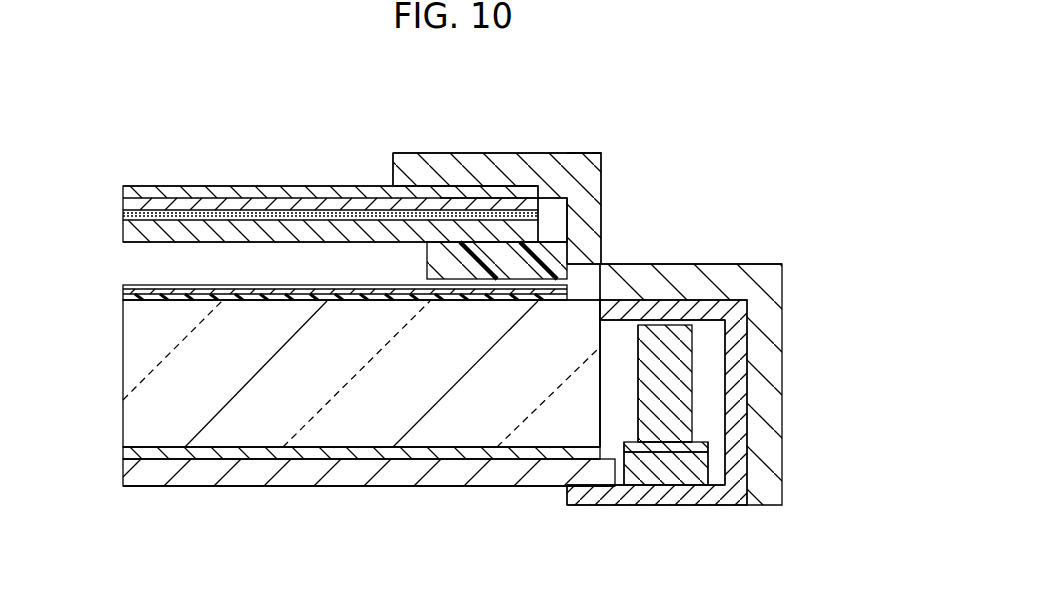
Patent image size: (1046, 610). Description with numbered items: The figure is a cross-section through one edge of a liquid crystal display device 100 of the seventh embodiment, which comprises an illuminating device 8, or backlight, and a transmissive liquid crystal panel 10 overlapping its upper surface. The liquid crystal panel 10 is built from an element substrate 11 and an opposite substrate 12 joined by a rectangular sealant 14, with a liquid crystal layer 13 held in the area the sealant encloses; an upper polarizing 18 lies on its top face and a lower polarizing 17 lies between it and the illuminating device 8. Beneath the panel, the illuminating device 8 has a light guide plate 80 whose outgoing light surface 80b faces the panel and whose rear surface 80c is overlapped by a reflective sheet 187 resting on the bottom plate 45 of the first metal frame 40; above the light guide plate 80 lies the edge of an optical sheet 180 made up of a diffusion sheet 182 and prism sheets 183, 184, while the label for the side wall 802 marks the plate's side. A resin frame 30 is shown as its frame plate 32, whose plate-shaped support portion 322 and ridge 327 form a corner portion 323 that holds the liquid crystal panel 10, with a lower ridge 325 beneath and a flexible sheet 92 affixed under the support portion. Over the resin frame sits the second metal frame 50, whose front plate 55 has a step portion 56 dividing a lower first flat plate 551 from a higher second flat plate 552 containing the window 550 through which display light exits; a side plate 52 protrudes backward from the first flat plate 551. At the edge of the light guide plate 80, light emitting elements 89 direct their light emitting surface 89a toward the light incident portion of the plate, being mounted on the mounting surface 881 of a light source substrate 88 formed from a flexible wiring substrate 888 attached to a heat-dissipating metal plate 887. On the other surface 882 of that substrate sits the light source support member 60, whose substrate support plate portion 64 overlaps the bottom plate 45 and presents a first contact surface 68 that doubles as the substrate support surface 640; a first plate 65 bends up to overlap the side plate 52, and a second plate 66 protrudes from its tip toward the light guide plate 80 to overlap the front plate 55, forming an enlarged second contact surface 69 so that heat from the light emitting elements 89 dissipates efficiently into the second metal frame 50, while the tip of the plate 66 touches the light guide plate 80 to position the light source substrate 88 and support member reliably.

The liquid crystal display device 100 is at (570, 48).
The liquid crystal panel 10 is at (348, 53).
The element substrate 11 is at (266, 232).
The opposite substrate 12 is at (290, 204).
The liquid crystal layer 13 is at (328, 196).
The upper polarizing 18 is at (123, 191).
The lower polarizing 17 is at (123, 237).
The optical sheet 180 is at (253, 112).
The prism sheet 184 is at (155, 290).
The prism sheet 183 is at (186, 292).
The diffusion sheet 182 is at (222, 294).
The illuminating device 8 is at (114, 282).
The light guide plate 80 is at (288, 455).
The outgoing light surface 80b is at (283, 278).
The rear surface 80c is at (193, 452).
The side wall of panel 802 is at (593, 350).
The reflective sheet 187 is at (154, 453).
The bottom plate 45 is at (336, 470).
The first metal frame 40 is at (228, 490).
The second metal frame 50 is at (614, 133).
The window 550 is at (392, 156).
The second flat plate 552 is at (458, 175).
The sealant 14 is at (495, 205).
The flexible sheet 92 is at (512, 230).
The corner portion 323 is at (548, 215).
The step portion 56 is at (575, 175).
The ridge 327 is at (556, 212).
The lower ridge 325 is at (556, 240).
The plate-shaped support portion 322 is at (428, 256).
The resin frame 30 is at (563, 259).
The frame plate 32 is at (508, 260).
The side plate 52 is at (770, 362).
The front plate 55 is at (677, 280).
The first flat plate 551 is at (649, 292).
The second contact surface 69 is at (745, 315).
The second plate 66 is at (711, 310).
The first plate 65 is at (742, 403).
The light source support member 60 is at (740, 510).
The substrate support plate portion 64 is at (712, 494).
The first contact surface 68 is at (558, 502).
The mounting surface 881 is at (675, 440).
The other surface 882 is at (682, 443).
The light emitting element 89 is at (640, 376).
The light emitting surface 89a is at (598, 352).
The light source substrate 88 is at (657, 552).
The flexible wiring substrate 888 is at (622, 468).
The metal plate 887 is at (655, 470).
The substrate support surface 640 is at (687, 462).